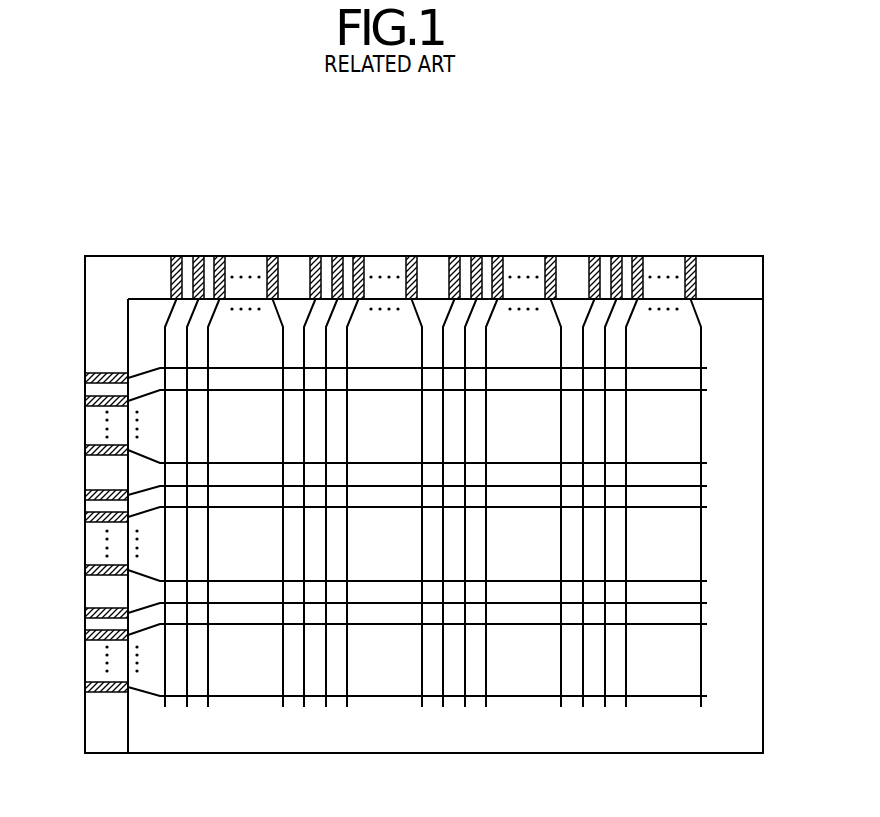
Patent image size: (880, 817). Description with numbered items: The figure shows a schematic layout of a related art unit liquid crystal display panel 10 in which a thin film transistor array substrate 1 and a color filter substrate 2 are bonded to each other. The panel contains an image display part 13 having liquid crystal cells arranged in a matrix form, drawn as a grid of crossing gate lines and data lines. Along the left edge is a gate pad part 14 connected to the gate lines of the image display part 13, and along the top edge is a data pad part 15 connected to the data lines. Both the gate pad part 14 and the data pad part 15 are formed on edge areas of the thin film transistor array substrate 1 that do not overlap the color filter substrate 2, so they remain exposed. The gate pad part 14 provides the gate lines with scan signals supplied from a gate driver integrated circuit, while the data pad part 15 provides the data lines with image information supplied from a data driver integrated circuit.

The liquid crystal display panel 10 is at (111, 240).
The thin film transistor array substrate 1 is at (752, 281).
The color filter substrate 2 is at (752, 339).
The image display part 13 is at (402, 438).
The gate pad part 14 is at (77, 692).
The data pad part 15 is at (702, 243).